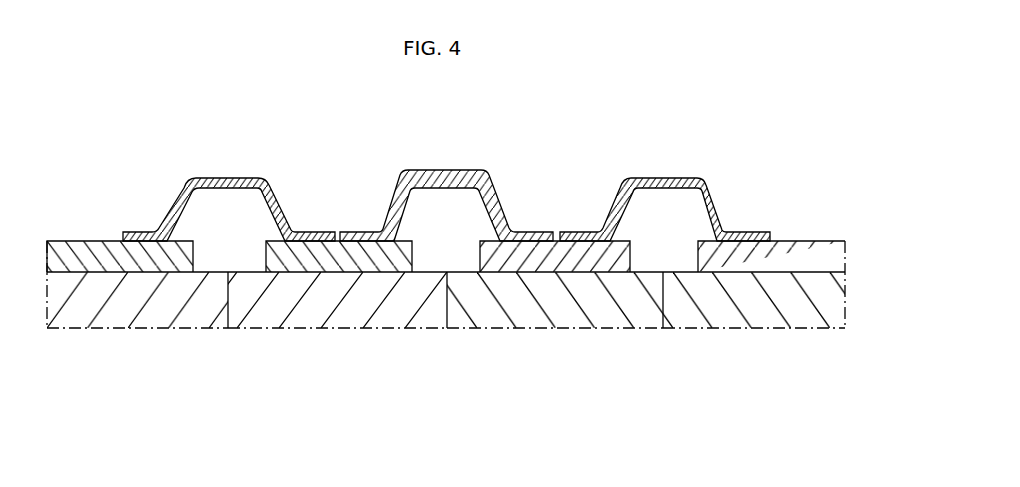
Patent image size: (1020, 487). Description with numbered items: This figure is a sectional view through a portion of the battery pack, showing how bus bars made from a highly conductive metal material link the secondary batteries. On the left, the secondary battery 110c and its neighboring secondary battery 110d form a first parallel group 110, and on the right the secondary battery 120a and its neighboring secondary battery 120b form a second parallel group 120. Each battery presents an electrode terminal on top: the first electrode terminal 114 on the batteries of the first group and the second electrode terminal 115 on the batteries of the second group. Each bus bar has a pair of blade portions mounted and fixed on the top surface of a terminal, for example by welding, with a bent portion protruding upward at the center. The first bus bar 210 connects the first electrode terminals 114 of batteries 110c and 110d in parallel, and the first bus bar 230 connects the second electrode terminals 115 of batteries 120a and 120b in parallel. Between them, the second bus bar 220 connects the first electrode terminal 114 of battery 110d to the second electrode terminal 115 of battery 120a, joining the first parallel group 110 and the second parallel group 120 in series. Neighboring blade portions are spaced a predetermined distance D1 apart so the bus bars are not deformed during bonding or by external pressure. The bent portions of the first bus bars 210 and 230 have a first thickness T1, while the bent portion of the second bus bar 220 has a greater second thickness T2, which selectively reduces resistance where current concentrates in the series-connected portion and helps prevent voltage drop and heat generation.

The first parallel group 110 is at (303, 396).
The secondary battery 110c is at (159, 316).
The neighboring secondary battery 110d is at (282, 316).
The first electrode terminal 114 is at (292, 250).
The second electrode terminal 115 is at (710, 248).
The second parallel group 120 is at (752, 396).
The secondary battery 120a is at (612, 316).
The neighboring secondary battery 120b is at (732, 316).
The first bus bar 210 is at (271, 180).
The second bus bar 220 is at (441, 180).
The first bus bar 230 is at (628, 178).
The first thickness T1 is at (193, 178).
The second thickness T2 is at (490, 170).
The predetermined spacing D1 is at (365, 207).